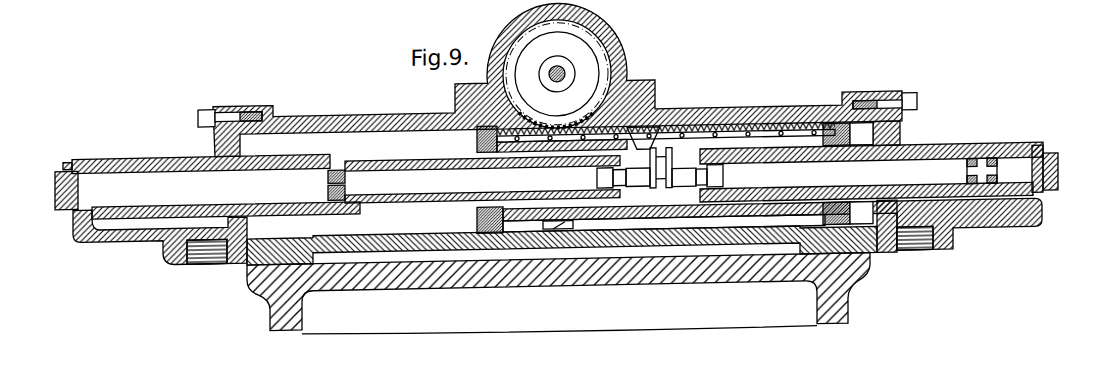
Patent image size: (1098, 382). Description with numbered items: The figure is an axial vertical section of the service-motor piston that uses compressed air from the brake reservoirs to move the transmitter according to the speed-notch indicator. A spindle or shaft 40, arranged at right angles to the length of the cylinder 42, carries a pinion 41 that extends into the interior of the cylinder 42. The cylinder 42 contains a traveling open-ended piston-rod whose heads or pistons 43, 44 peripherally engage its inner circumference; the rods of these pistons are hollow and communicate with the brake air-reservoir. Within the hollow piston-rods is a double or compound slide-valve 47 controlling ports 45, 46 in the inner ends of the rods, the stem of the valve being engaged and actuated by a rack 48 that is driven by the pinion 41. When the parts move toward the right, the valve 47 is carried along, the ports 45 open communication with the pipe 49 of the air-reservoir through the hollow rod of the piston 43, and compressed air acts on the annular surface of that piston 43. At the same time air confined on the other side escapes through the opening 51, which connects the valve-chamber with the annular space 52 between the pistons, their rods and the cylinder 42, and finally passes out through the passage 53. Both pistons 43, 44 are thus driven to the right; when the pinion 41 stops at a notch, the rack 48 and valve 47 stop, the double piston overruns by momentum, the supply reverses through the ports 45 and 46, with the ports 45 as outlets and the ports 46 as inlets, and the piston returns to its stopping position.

The spindle or shaft 40 is at (551, 86).
The pinion 41 is at (549, 138).
The cylinder 42 is at (375, 121).
The piston 43 is at (477, 150).
The piston 44 is at (860, 204).
The ports 45 is at (608, 212).
The ports 46 is at (724, 175).
The double or compound slide-valve 47 is at (661, 177).
The rack 48 is at (683, 134).
The pipe 49 is at (200, 270).
The opening 51 is at (661, 176).
The annular space 52 is at (664, 222).
The passage 53 is at (560, 242).